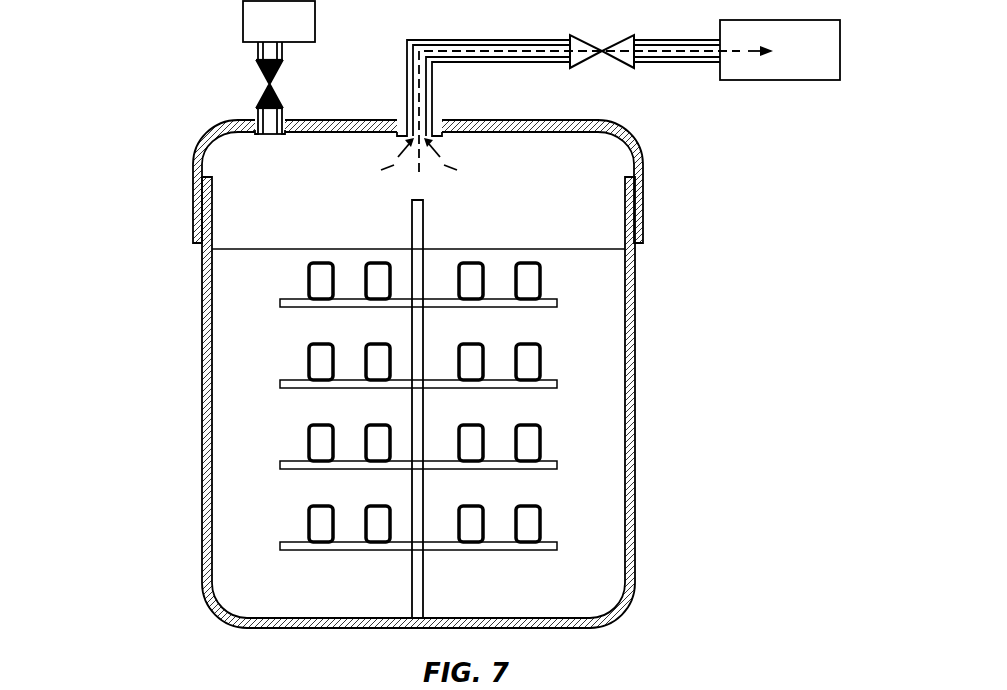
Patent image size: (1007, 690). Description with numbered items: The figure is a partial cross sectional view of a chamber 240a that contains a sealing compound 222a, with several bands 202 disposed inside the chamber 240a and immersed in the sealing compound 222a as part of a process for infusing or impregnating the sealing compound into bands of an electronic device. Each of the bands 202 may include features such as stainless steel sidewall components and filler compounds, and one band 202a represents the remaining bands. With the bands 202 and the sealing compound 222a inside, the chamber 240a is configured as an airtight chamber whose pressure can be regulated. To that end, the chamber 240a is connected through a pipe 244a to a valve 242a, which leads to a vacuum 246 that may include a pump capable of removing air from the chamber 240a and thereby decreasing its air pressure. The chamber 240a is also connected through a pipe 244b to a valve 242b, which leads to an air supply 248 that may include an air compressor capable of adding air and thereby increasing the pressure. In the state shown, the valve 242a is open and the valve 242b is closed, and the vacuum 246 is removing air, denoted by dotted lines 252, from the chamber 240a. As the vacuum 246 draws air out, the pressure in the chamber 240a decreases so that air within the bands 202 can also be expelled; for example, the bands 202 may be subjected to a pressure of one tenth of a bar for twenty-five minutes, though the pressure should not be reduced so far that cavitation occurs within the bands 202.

The air supply 248 is at (300, 32).
The pipe 244b is at (257, 52).
The valve 242b is at (260, 86).
The chamber 240a is at (168, 313).
The sealing compound 222a is at (271, 296).
The band 202a is at (541, 263).
The bands 202 is at (560, 278).
The valve 242a is at (618, 68).
The pipe 244a is at (708, 63).
The dotted lines 252 is at (752, 56).
The vacuum 246 is at (828, 81).